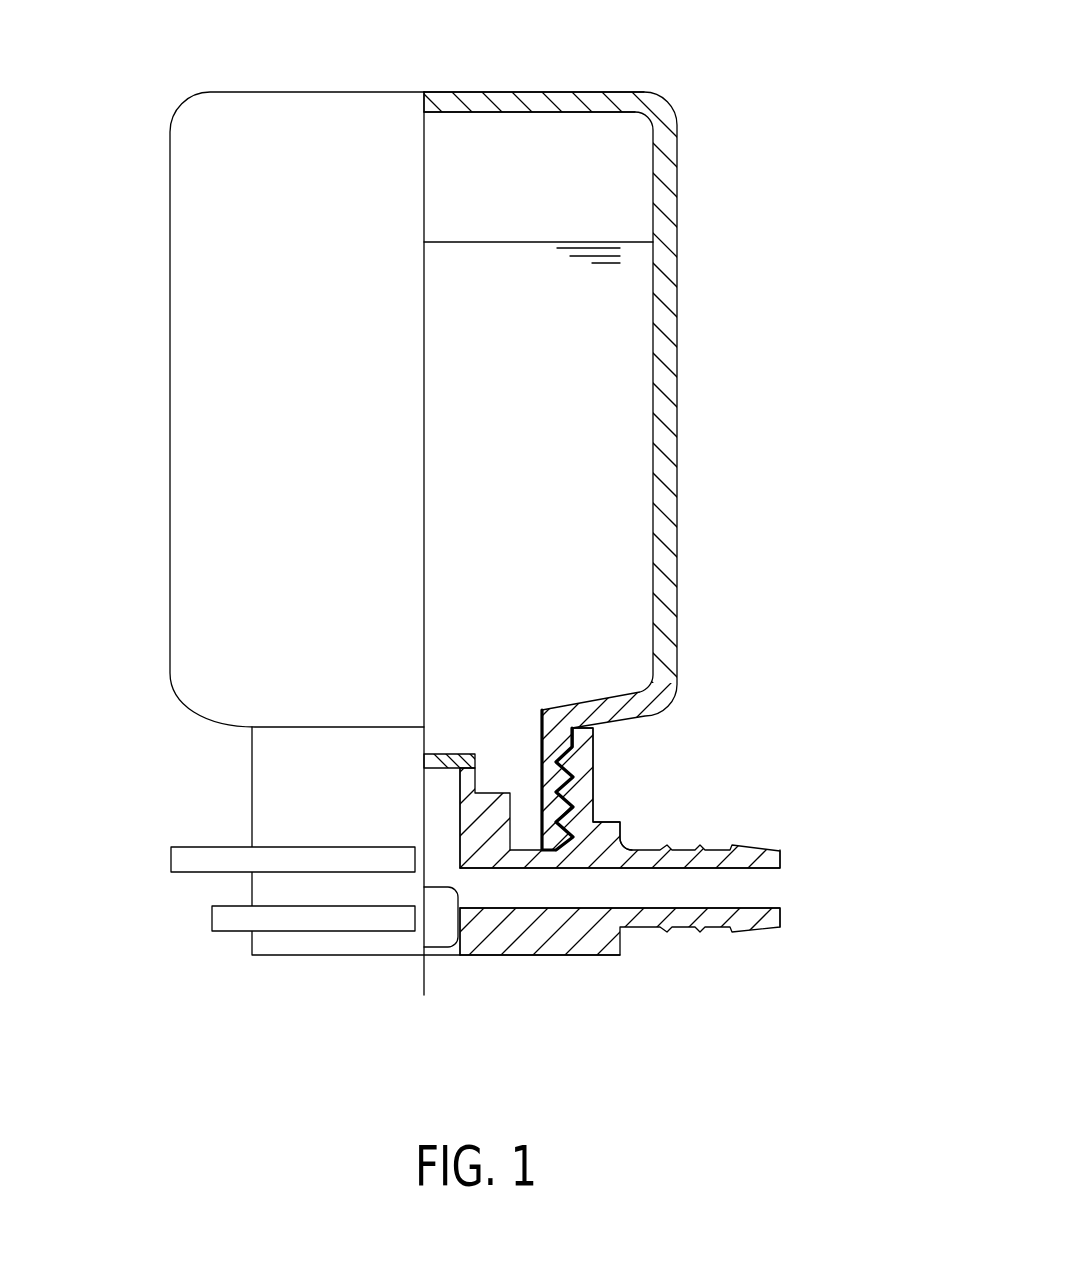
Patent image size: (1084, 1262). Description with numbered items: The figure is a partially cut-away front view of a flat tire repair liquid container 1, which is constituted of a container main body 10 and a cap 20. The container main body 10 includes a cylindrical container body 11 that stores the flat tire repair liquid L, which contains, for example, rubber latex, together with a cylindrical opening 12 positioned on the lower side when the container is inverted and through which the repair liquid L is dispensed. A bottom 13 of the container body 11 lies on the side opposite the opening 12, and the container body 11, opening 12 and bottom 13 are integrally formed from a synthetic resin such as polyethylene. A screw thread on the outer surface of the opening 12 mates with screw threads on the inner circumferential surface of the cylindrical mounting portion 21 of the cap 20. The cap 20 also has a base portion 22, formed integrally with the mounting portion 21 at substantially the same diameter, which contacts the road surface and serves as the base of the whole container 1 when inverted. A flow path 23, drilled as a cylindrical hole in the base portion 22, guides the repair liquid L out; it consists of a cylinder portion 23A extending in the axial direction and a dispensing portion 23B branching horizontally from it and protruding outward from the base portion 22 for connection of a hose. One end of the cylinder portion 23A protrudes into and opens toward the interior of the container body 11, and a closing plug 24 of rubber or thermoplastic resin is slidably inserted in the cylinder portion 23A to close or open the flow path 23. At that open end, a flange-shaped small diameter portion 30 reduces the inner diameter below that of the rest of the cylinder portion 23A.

The flat tire repair liquid container 1 is at (542, 631).
The container main body 10 is at (542, 631).
The container body 11 is at (660, 432).
The opening 12 is at (552, 782).
The bottom 13 is at (485, 100).
The flat tire repair liquid L is at (633, 277).
The cap 20 is at (592, 850).
The mounting portion 21 is at (583, 797).
The base portion 22 is at (610, 957).
The flow path 23 is at (609, 930).
The cylinder portion 23A is at (438, 823).
The dispensing portion 23B is at (545, 885).
The closing plug 24 is at (432, 923).
The small diameter portion 30 is at (435, 757).